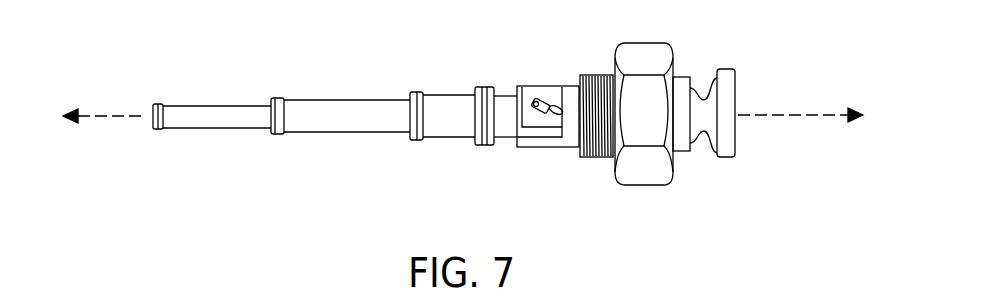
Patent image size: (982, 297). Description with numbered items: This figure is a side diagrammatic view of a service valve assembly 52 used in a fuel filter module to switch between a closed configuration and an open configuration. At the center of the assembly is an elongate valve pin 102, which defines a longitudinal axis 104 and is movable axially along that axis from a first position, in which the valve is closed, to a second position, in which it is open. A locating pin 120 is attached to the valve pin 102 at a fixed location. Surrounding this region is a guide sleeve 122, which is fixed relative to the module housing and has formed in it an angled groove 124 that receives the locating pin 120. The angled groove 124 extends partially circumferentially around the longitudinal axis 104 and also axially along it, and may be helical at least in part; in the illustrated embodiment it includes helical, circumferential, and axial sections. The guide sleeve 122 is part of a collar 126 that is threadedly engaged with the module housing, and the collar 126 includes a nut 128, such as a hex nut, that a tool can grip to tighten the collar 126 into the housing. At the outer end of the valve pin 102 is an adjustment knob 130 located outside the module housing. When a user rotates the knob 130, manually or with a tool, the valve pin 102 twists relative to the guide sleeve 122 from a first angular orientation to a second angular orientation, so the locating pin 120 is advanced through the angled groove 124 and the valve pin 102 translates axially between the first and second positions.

The service valve assembly 52 is at (166, 80).
The valve pin 102 is at (348, 133).
The longitudinal axis 104 is at (820, 117).
The locating pin 120 is at (543, 102).
The guide sleeve 122 is at (552, 148).
The angled groove 124 is at (565, 112).
The collar 126 is at (642, 185).
The nut 128 is at (638, 52).
The adjustment knob 130 is at (723, 157).